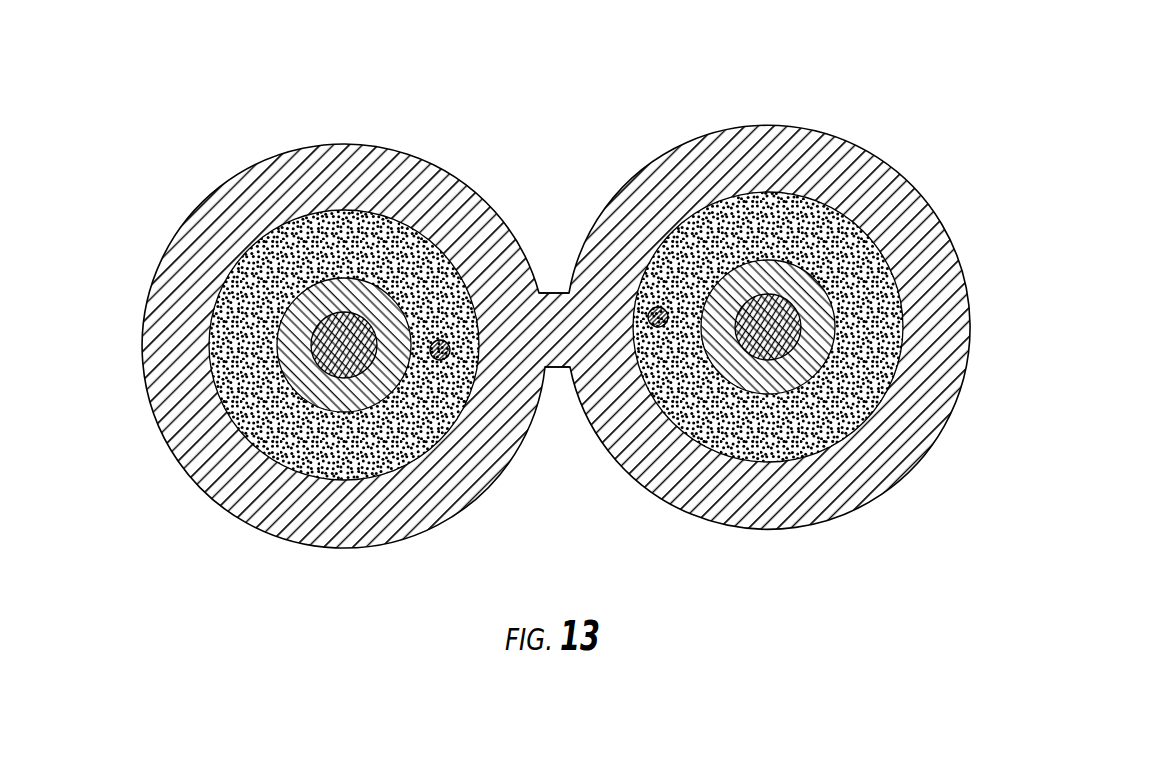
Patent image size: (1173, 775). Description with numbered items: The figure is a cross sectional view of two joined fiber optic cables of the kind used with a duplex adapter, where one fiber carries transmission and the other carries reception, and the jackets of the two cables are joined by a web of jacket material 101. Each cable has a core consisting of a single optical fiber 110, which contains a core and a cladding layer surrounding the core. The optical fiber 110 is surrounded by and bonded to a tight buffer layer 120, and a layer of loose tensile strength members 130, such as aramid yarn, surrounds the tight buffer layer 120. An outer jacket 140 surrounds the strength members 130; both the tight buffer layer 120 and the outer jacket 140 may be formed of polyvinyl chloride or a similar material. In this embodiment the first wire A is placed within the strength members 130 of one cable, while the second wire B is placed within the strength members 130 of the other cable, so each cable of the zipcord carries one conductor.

The optical fiber 110 is at (207, 322).
The tight buffer layer 120 is at (242, 274).
The strength members 130 is at (407, 217).
The outer jacket 140 is at (405, 150).
The web of jacket material 101 is at (549, 292).
The first wire A is at (448, 412).
The second wire B is at (637, 377).